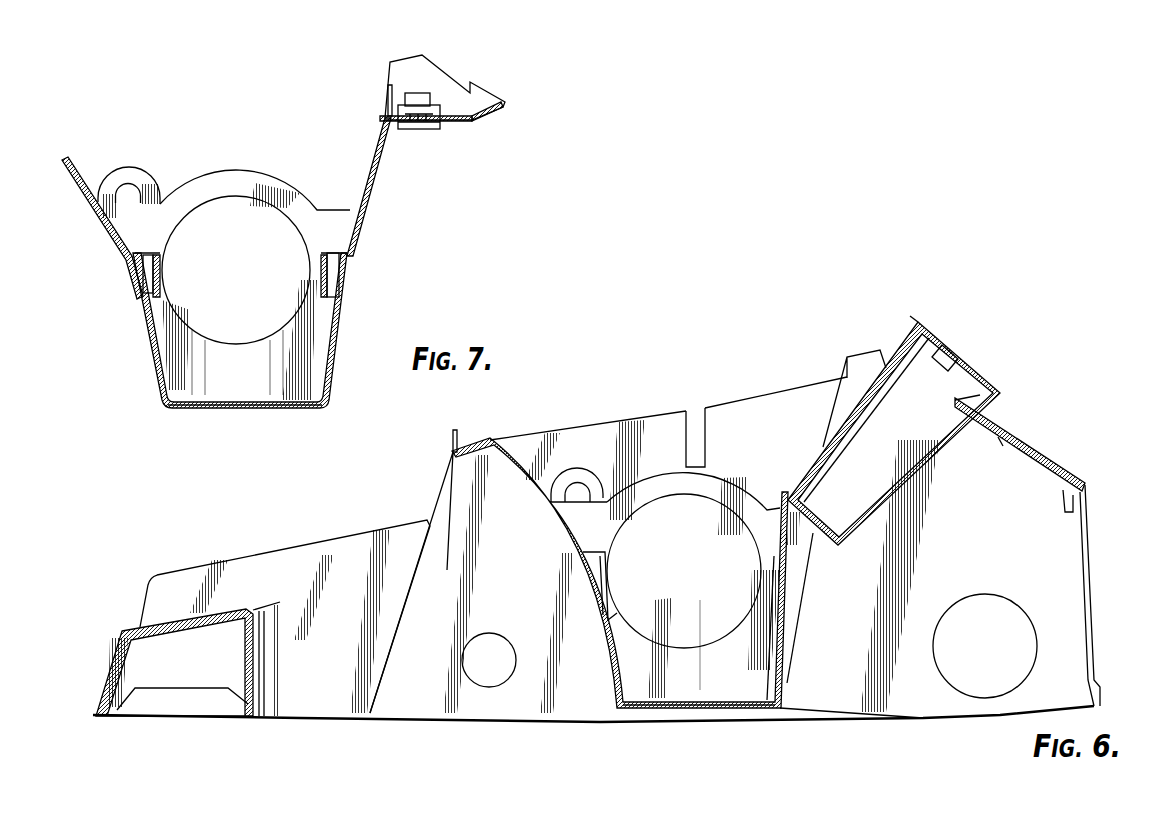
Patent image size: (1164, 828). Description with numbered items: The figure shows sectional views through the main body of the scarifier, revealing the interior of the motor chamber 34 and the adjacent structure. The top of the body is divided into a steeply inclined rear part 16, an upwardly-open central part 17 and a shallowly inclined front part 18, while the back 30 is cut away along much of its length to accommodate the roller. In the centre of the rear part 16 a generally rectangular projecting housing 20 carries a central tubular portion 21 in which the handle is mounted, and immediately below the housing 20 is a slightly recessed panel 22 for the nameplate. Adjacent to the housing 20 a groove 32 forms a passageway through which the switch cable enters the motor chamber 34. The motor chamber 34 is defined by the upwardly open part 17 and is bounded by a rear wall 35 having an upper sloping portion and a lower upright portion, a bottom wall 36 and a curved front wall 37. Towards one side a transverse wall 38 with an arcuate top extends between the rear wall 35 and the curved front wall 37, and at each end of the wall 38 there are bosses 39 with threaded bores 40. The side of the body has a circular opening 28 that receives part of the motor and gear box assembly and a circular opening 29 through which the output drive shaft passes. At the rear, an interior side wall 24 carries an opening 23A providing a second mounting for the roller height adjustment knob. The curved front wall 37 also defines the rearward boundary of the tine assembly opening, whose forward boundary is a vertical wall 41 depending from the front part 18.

In FIG. 6, the rear part 16 is at (1001, 416).
In FIG. 6, the upwardly-open central part 17 is at (694, 404).
In FIG. 6, the front part 18 is at (257, 551).
In FIG. 6, the projecting housing 20 is at (905, 333).
In FIG. 6, the central tubular portion 21 is at (917, 453).
In FIG. 6, the recessed panel 22 is at (1037, 455).
In FIG. 6, the opening 23A is at (988, 685).
In FIG. 6, the interior side wall 24 is at (983, 568).
In FIG. 7, the circular opening 28 is at (252, 276).
In FIG. 6, the circular opening 28 is at (650, 623).
In FIG. 6, the circular opening 29 is at (489, 678).
In FIG. 6, the back 30 is at (1094, 643).
In FIG. 7, the groove 32 is at (428, 131).
In FIG. 7, the motor chamber 34 is at (300, 383).
In FIG. 6, the motor chamber 34 is at (730, 690).
In FIG. 7, the rear wall 35 is at (328, 358).
In FIG. 6, the rear wall 35 is at (787, 680).
In FIG. 7, the bottom wall 36 is at (273, 412).
In FIG. 6, the bottom wall 36 is at (713, 705).
In FIG. 7, the curved front wall 37 is at (113, 230).
In FIG. 6, the curved front wall 37 is at (611, 668).
In FIG. 7, the transverse wall 38 is at (245, 387).
In FIG. 6, the transverse wall 38 is at (719, 690).
In FIG. 7, the bosses 39 is at (138, 280).
In FIG. 6, the bosses 39 is at (588, 563).
In FIG. 7, the threaded bores 40 is at (151, 294).
In FIG. 6, the vertical wall 41 is at (250, 686).